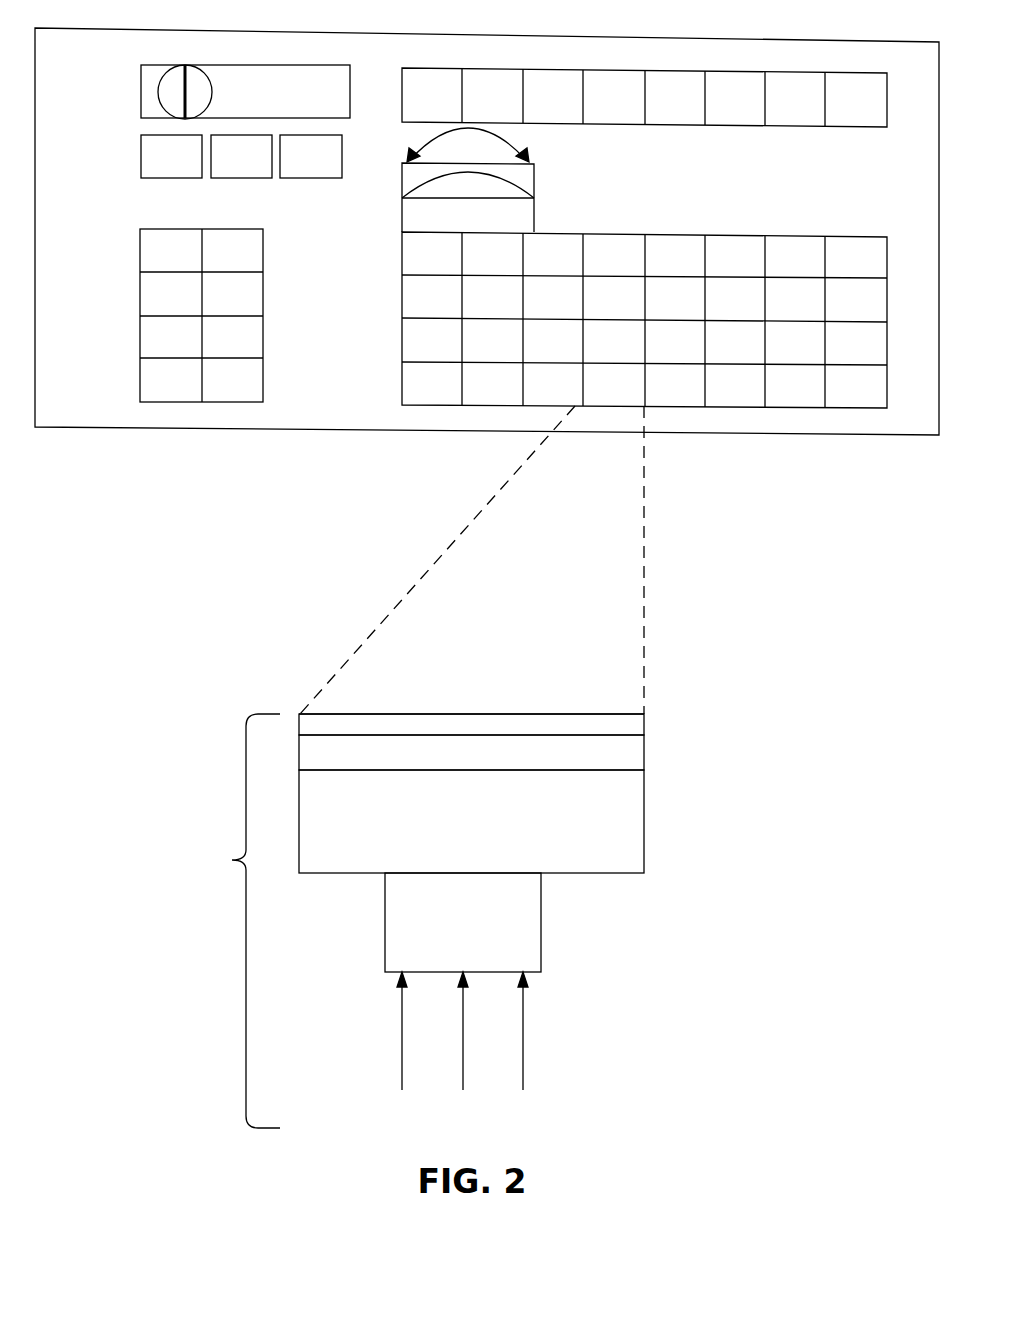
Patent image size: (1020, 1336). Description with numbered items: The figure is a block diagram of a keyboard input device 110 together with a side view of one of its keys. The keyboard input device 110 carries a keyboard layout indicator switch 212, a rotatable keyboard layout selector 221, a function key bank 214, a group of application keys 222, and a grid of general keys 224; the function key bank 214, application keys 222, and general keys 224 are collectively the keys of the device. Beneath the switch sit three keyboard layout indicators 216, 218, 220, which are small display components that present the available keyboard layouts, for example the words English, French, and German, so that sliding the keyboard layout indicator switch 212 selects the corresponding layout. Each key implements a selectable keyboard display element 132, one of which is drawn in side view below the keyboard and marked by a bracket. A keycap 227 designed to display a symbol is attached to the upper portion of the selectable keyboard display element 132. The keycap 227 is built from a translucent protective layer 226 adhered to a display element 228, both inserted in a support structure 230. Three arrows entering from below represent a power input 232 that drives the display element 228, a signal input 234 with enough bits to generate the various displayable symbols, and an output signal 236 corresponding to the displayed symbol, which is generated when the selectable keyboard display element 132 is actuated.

The keyboard input device 110 is at (103, 400).
The keyboard layout indicator switch 212 is at (247, 65).
The function key bank 214 is at (556, 69).
The keyboard layout indicator 216 is at (175, 180).
The keyboard layout indicator 218 is at (243, 180).
The keyboard layout indicator 220 is at (313, 180).
The rotatable keyboard layout selector 221 is at (535, 218).
The application keys 222 is at (210, 403).
The general keys 224 is at (484, 406).
The translucent protective layer 226 is at (644, 727).
The keycap 227 is at (385, 720).
The display element 228 is at (644, 752).
The support structure 230 is at (644, 822).
The power input 232 is at (402, 1033).
The signal input 234 is at (463, 1033).
The output signal 236 is at (523, 1033).
The selectable keyboard display element 132 is at (365, 921).